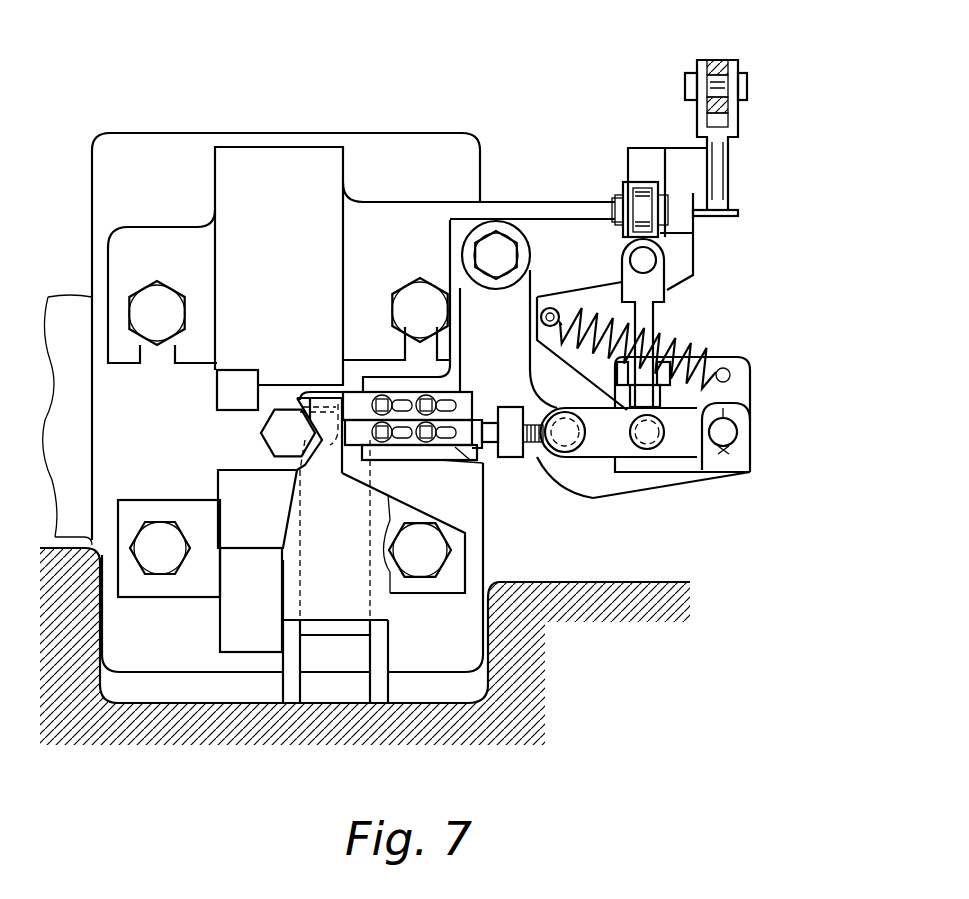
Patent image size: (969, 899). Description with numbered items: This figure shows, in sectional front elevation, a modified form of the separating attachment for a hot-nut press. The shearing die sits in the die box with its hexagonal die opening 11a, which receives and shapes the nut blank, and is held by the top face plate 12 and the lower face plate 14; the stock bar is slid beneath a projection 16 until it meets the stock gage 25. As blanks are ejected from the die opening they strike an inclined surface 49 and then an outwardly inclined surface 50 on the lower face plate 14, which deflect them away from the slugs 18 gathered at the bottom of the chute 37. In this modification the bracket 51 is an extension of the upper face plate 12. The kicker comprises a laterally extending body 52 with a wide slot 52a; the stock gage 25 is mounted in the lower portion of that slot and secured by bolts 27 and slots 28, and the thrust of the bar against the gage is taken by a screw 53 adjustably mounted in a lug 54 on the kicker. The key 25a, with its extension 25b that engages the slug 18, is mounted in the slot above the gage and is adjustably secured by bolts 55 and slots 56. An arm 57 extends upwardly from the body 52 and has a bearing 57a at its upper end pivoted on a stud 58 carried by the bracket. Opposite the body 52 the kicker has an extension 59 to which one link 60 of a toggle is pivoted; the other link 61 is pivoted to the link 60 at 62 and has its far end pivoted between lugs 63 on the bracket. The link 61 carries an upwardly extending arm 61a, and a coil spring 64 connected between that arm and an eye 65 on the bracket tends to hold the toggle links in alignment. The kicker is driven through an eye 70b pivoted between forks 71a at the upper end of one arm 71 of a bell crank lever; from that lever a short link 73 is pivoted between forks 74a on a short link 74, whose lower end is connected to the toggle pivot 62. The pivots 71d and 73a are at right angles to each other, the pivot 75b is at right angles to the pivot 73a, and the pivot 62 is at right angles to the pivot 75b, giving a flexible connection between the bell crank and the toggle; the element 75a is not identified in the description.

The top face plate 12 is at (279, 266).
The projection 16 is at (237, 390).
The lower face plate 14 is at (200, 576).
The inclined surface 49 is at (296, 488).
The outwardly inclined surface 50 is at (253, 524).
The hexagonal die opening 11a is at (270, 437).
The slug 18 is at (333, 514).
The chute 37 is at (335, 631).
The extension 25b is at (318, 392).
The key 25a is at (368, 392).
The stock gage 25 is at (432, 442).
The slots 28 is at (404, 441).
The bolts 27 is at (387, 441).
The bolts 55 is at (424, 396).
The slots 56 is at (444, 397).
The lug 54 is at (508, 406).
The body 52 is at (452, 455).
The wide slot 52a is at (524, 458).
The arm 57 is at (508, 314).
The stud 58 is at (482, 252).
The bearing 57a is at (500, 226).
The bracket 51 is at (542, 214).
The screw 53 is at (540, 412).
The extension 59 is at (558, 455).
The link 60 is at (581, 432).
The link 61 is at (663, 430).
The pivot 62 is at (662, 438).
The lugs 63 is at (746, 433).
The arm 61a is at (738, 374).
The coil spring 64 is at (684, 352).
The eye 65 is at (553, 307).
The pivot 75b is at (616, 374).
The spring seat 75a is at (660, 392).
The short link 74 is at (653, 315).
The forks 74a is at (660, 264).
The short link 73 is at (668, 236).
The pivot 73a is at (631, 262).
The pivot 71d is at (620, 200).
The arm 71 is at (720, 163).
The forks 71a is at (740, 116).
The eye 70b is at (726, 62).